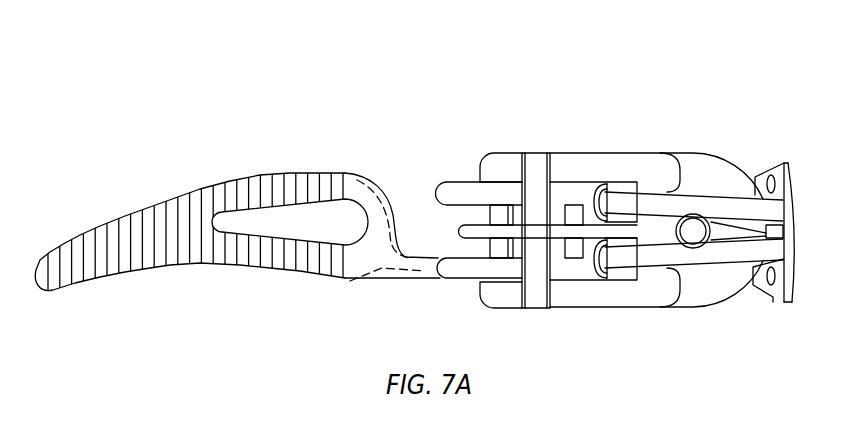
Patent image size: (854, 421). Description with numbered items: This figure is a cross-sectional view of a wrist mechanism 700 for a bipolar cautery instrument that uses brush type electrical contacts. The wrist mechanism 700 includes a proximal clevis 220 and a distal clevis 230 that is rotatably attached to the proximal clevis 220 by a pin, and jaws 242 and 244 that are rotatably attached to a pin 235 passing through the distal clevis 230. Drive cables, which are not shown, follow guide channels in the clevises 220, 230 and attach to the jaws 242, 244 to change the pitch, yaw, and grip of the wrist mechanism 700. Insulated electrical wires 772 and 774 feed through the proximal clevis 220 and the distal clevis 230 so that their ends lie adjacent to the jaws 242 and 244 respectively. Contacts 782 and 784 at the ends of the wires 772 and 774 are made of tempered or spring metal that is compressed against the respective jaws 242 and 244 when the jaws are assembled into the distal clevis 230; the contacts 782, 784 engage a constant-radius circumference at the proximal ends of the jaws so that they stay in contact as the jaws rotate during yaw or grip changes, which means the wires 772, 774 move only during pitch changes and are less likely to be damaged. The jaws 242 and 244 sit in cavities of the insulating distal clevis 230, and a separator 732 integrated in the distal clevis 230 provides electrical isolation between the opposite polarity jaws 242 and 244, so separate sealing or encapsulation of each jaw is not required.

The wrist mechanism 700 is at (232, 88).
The jaw 242 is at (262, 173).
The jaw 244 is at (470, 189).
The separator 732 is at (457, 231).
The pin 235 is at (537, 165).
The contact 784 is at (606, 183).
The contact 782 is at (605, 277).
The insulated electrical wire 774 is at (677, 200).
The insulated electrical wire 772 is at (715, 258).
The proximal clevis 220 is at (785, 166).
The distal clevis 230 is at (658, 299).